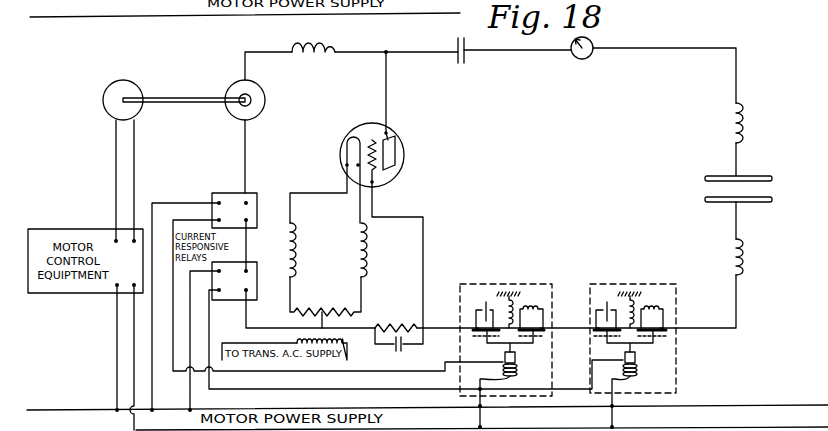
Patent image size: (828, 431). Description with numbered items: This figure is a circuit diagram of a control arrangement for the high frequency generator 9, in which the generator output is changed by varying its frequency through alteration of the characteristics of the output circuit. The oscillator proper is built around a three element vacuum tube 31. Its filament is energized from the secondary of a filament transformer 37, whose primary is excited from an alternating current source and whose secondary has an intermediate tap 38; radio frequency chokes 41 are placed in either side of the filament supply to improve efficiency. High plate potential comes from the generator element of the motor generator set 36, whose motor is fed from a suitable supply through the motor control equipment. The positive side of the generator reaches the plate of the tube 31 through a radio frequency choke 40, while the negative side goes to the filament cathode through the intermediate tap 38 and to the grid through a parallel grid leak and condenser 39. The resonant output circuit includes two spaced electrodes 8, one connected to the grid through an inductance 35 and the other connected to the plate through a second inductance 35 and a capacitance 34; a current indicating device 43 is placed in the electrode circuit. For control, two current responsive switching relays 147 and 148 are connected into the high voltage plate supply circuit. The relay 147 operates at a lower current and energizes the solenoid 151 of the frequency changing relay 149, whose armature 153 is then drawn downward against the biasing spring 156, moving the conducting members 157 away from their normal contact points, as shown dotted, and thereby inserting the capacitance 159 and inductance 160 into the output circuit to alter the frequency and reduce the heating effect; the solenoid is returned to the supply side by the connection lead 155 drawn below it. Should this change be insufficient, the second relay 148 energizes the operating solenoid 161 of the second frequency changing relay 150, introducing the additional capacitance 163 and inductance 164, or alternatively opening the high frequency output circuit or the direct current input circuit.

The spaced electrodes 8 is at (705, 199).
The high frequency generator 9 is at (575, 182).
The three element vacuum tube 31 is at (405, 155).
The capacitance 34 is at (464, 60).
The inductance 35 is at (728, 122).
The motor generator set 36 is at (179, 97).
The filament transformer 37 is at (372, 353).
The intermediate tap 38 is at (320, 327).
The parallel grid leak and condenser 39 is at (414, 321).
The radio frequency choke 40 is at (312, 62).
The radio frequency chokes 41 is at (358, 238).
The current indicating device 43 is at (584, 59).
The current responsive switching relay 147 is at (229, 192).
The current responsive switching relay 148 is at (229, 292).
The frequency changing relay 149 is at (465, 284).
The second frequency changing relay 150 is at (603, 284).
The solenoid 151 is at (517, 365).
The armature 153 is at (516, 356).
The connection lead 155 is at (513, 378).
The biasing spring 156 is at (513, 306).
The conducting members 157 is at (470, 333).
The capacitance 159 is at (488, 302).
The inductance 160 is at (537, 306).
The operating solenoid 161 is at (637, 364).
The capacitance 163 is at (609, 302).
The inductance 164 is at (660, 306).